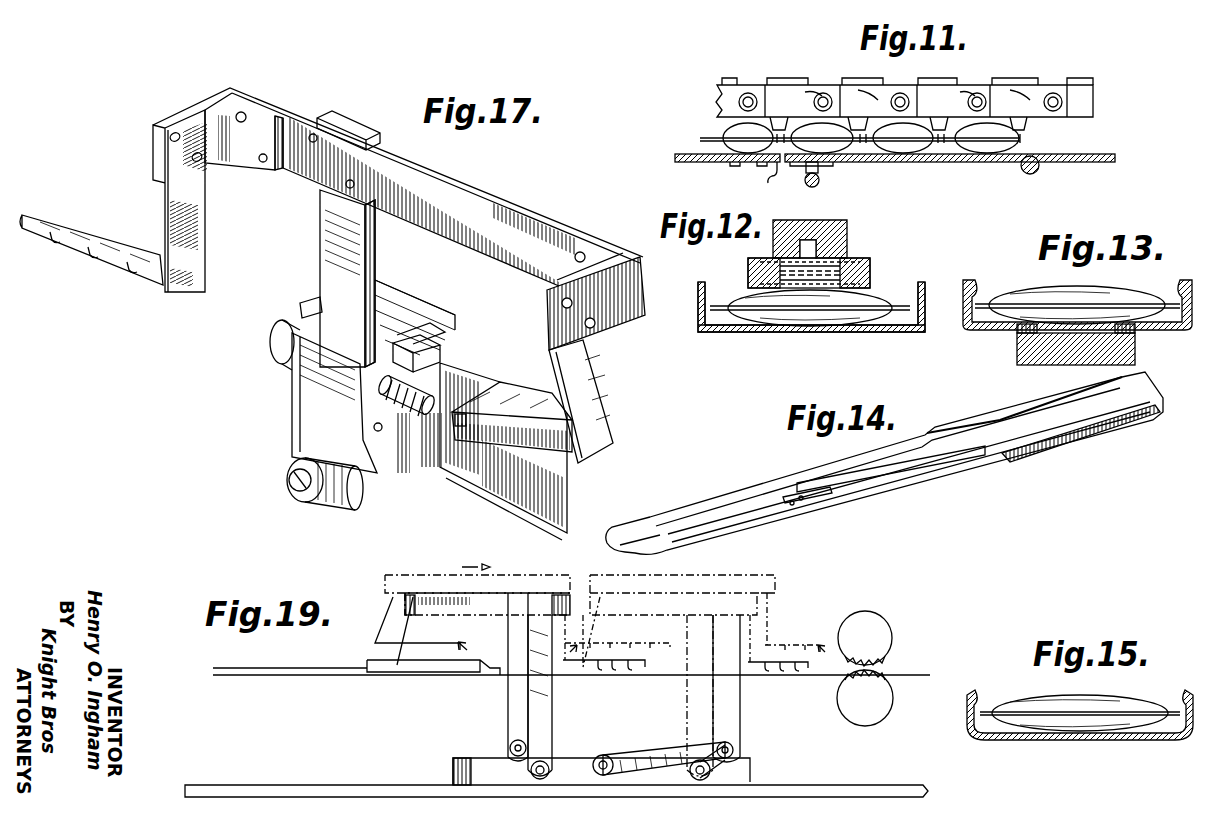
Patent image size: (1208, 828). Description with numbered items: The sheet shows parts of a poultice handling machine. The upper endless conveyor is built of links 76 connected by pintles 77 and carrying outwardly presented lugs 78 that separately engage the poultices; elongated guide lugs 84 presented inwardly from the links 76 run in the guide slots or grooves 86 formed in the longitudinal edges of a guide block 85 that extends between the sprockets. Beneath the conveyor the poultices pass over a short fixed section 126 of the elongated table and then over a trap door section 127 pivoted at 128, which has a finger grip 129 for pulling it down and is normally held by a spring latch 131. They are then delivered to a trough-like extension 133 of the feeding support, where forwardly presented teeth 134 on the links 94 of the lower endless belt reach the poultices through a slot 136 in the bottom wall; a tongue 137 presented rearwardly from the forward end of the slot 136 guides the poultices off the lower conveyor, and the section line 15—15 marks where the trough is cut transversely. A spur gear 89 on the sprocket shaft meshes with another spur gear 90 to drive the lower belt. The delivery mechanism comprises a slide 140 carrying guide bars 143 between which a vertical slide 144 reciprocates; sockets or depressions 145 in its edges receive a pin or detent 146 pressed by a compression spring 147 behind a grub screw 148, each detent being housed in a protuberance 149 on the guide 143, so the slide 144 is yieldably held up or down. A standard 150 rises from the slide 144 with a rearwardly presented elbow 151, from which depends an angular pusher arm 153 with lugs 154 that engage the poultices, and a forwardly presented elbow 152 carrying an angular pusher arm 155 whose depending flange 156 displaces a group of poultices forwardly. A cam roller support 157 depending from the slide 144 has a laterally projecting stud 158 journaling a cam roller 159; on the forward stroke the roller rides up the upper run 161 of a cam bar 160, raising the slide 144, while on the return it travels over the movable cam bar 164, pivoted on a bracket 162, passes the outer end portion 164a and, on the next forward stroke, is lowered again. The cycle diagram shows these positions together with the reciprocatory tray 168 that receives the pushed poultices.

In FIG. 14, the section line 15 is at (717, 480).
In FIG. 11, the links 76 is at (862, 96).
In FIG. 12, the links 76 is at (868, 266).
In FIG. 11, the pintles 77 is at (750, 94).
In FIG. 12, the pintles 77 is at (757, 274).
In FIG. 11, the outwardly presented lugs 78 is at (945, 143).
In FIG. 12, the outwardly presented lugs 78 is at (878, 296).
In FIG. 11, the elongated guide lugs 84 is at (790, 85).
In FIG. 12, the elongated guide lugs 84 is at (832, 258).
In FIG. 12, the guide block 85 is at (848, 223).
In FIG. 12, the guide slots 86 is at (808, 240).
In FIG. 19, the spur gear 89 is at (843, 622).
In FIG. 19, the spur gear 90 is at (857, 712).
In FIG. 13, the links 94 is at (1135, 360).
In FIG. 12, the short fixed section 126 is at (762, 332).
In FIG. 11, the trap door section 127 is at (968, 162).
In FIG. 11, the pivot 128 is at (1040, 170).
In FIG. 11, the finger grip 129 is at (820, 181).
In FIG. 11, the spring latch 131 is at (768, 179).
In FIG. 13, the trough-like extension 133 is at (976, 328).
In FIG. 14, the trough-like extension 133 is at (1022, 430).
In FIG. 15, the trough-like extension 133 is at (1050, 741).
In FIG. 13, the forwardly presented teeth 134 is at (1020, 333).
In FIG. 14, the slot 136 is at (880, 489).
In FIG. 14, the tongue 137 is at (822, 492).
In FIG. 17, the slide 140 is at (463, 470).
In FIG. 17, the guide bars 143 is at (312, 302).
In FIG. 17, the vertical slide 144 is at (383, 327).
In FIG. 17, the sockets 145 is at (373, 425).
In FIG. 17, the detent 146 is at (377, 385).
In FIG. 17, the compression spring 147 is at (383, 400).
In FIG. 17, the grub screw 148 is at (412, 375).
In FIG. 17, the protuberance 149 is at (425, 355).
In FIG. 17, the standard 150 is at (325, 235).
In FIG. 19, the standard 150 is at (546, 706).
In FIG. 17, the rearwardly presented elbow 151 is at (217, 112).
In FIG. 17, the forwardly presented elbow 152 is at (613, 318).
In FIG. 17, the pusher arm 153 is at (105, 237).
In FIG. 19, the pusher arm 153 is at (601, 668).
In FIG. 17, the lugs 154 is at (92, 256).
In FIG. 19, the lugs 154 is at (643, 668).
In FIG. 17, the angular pusher arm 155 is at (597, 403).
In FIG. 19, the angular pusher arm 155 is at (407, 630).
In FIG. 17, the depending flange 156 is at (468, 420).
In FIG. 17, the cam roller support 157 is at (343, 507).
In FIG. 17, the stud 158 is at (297, 486).
In FIG. 17, the cam roller 159 is at (298, 471).
In FIG. 19, the cam roller 159 is at (546, 762).
In FIG. 19, the cam bar 160 is at (512, 775).
In FIG. 19, the upper run 161 is at (490, 760).
In FIG. 19, the bracket 162 is at (601, 776).
In FIG. 19, the movable cam bar 164 is at (637, 753).
In FIG. 19, the outer end portion 164a is at (712, 755).
In FIG. 19, the reciprocatory tray 168 is at (431, 678).